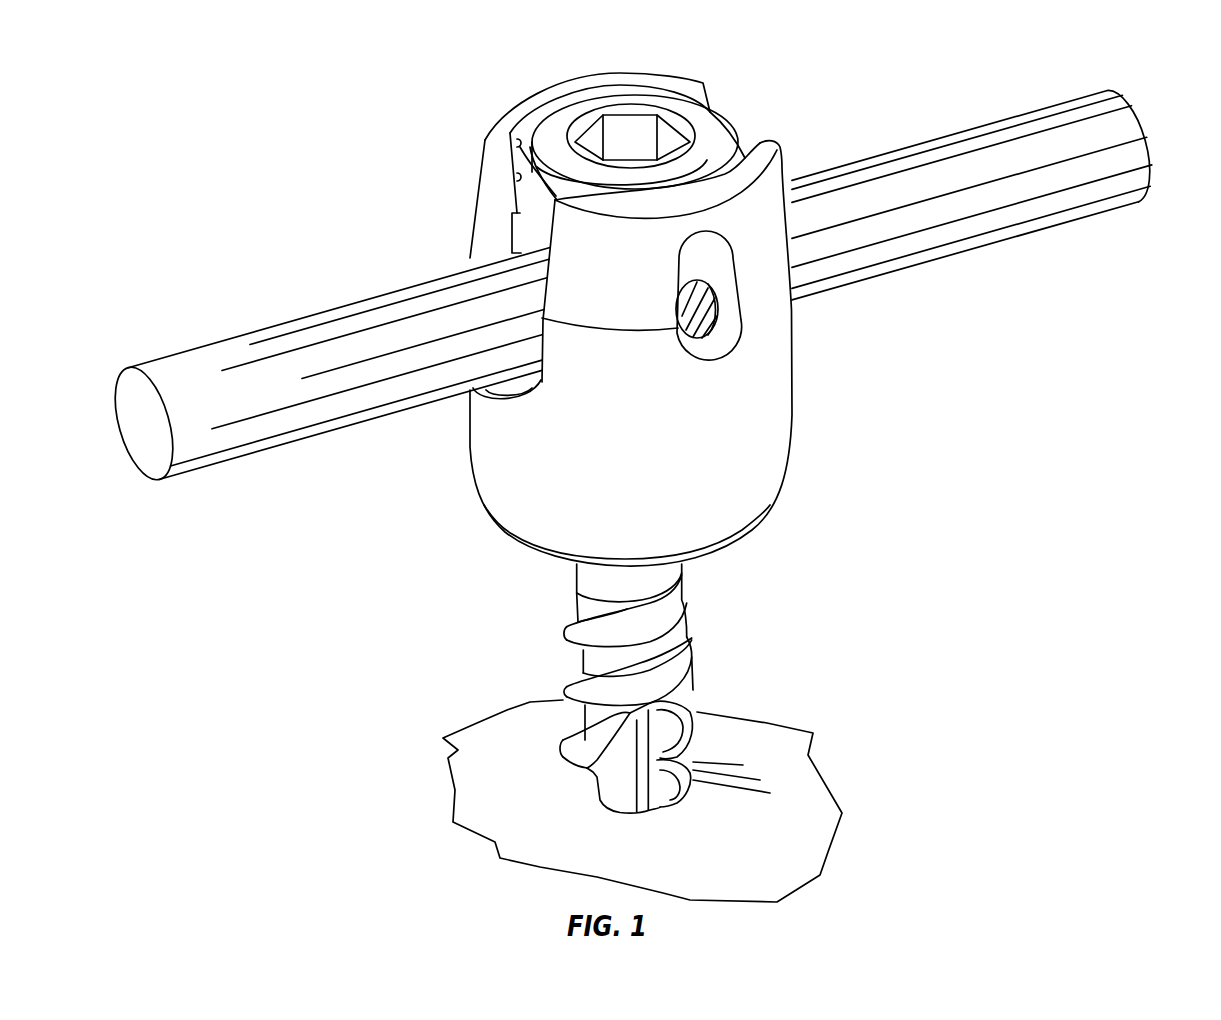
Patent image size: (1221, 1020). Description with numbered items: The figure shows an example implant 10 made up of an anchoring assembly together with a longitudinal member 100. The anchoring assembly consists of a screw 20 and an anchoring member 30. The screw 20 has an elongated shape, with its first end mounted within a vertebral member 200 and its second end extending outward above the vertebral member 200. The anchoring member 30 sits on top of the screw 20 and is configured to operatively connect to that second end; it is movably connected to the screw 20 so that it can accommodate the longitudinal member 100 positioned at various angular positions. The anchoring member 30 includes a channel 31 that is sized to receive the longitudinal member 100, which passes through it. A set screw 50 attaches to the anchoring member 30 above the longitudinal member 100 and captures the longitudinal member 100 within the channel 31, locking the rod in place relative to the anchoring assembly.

The implant 10 is at (1032, 487).
The screw 20 is at (573, 620).
The anchoring member 30 is at (738, 407).
The channel 31 is at (512, 240).
The set screw 50 is at (520, 175).
The longitudinal member 100 is at (872, 193).
The vertebral member 200 is at (777, 798).